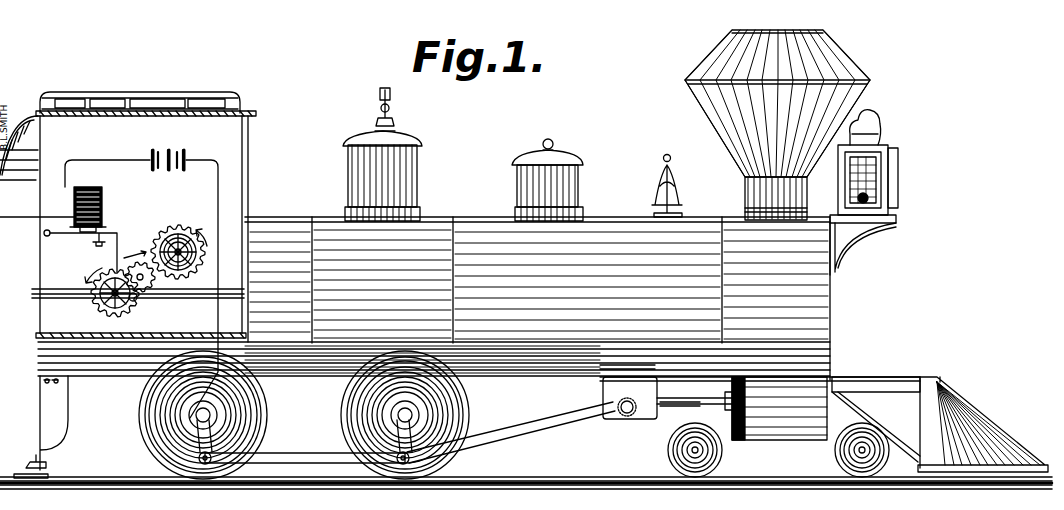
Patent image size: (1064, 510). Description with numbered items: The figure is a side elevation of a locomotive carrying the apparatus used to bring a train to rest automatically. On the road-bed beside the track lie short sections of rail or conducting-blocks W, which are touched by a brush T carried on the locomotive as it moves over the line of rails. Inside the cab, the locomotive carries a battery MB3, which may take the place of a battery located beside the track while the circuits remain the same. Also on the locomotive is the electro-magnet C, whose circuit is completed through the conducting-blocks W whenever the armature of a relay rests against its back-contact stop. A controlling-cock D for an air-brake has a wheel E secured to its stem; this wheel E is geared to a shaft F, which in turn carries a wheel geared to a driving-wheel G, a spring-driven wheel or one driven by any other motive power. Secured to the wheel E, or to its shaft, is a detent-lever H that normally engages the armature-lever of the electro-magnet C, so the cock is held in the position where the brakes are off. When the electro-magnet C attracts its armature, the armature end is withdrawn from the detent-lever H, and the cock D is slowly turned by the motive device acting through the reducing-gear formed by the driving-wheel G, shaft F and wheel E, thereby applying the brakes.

The battery MB3 is at (161, 149).
The electro-magnet C is at (102, 207).
The detent-lever H is at (116, 259).
The driving-wheel G is at (177, 226).
The shaft F is at (153, 289).
The controlling-cock D is at (135, 300).
The wheel E is at (98, 310).
The brush T is at (26, 463).
The conducting-blocks W is at (48, 475).